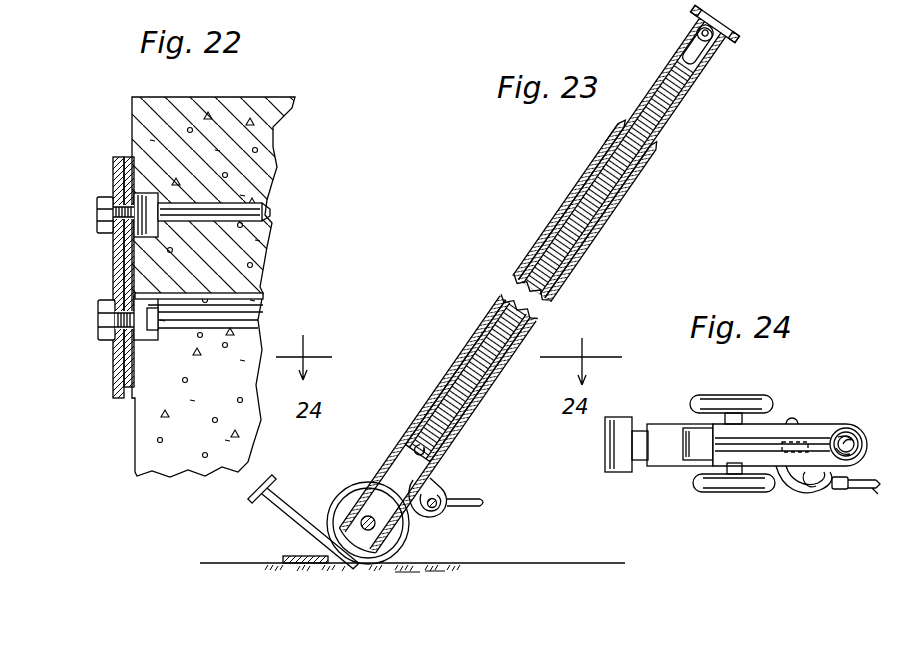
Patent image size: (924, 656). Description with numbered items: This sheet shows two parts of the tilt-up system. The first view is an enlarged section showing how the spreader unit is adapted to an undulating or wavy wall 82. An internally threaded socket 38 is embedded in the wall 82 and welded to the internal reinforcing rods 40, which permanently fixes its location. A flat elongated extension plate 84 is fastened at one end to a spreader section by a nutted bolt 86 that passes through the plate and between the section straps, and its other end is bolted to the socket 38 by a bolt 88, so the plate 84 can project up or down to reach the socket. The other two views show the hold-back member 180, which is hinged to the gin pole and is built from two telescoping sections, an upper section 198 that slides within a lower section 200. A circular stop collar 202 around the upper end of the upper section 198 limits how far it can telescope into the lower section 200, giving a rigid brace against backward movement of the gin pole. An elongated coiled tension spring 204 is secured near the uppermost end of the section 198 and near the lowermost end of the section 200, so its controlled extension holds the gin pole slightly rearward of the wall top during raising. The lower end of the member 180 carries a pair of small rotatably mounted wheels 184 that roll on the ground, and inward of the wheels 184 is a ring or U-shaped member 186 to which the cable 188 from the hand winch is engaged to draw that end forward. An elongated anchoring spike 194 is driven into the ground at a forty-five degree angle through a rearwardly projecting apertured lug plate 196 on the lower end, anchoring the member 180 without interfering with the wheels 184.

In FIG. 22, the undulating wall 82 is at (242, 92).
In FIG. 22, the extension plate 84 is at (117, 281).
In FIG. 22, the internally threaded socket 38 is at (150, 194).
In FIG. 22, the reinforcing rod 40 is at (262, 213).
In FIG. 22, the bolt 88 is at (96, 216).
In FIG. 22, the nutted bolt 86 is at (103, 333).
In FIG. 23, the hold-back member 180 is at (504, 274).
In FIG. 23, the upper telescoping section 198 is at (673, 116).
In FIG. 23, the stop collar 202 is at (734, 38).
In FIG. 23, the lower telescoping section 200 is at (600, 231).
In FIG. 24, the lower telescoping section 200 is at (775, 457).
In FIG. 23, the coiled tension spring 204 is at (655, 132).
In FIG. 24, the coiled tension spring 204 is at (838, 435).
In FIG. 23, the wheel 184 is at (404, 536).
In FIG. 24, the wheel 184 is at (743, 400).
In FIG. 23, the ring member 186 is at (441, 488).
In FIG. 24, the ring member 186 is at (804, 479).
In FIG. 23, the cable 188 is at (462, 504).
In FIG. 24, the cable 188 is at (860, 492).
In FIG. 23, the anchoring spike 194 is at (278, 496).
In FIG. 24, the anchoring spike 194 is at (641, 434).
In FIG. 23, the apertured lug plate 196 is at (300, 556).
In FIG. 24, the apertured lug plate 196 is at (666, 462).